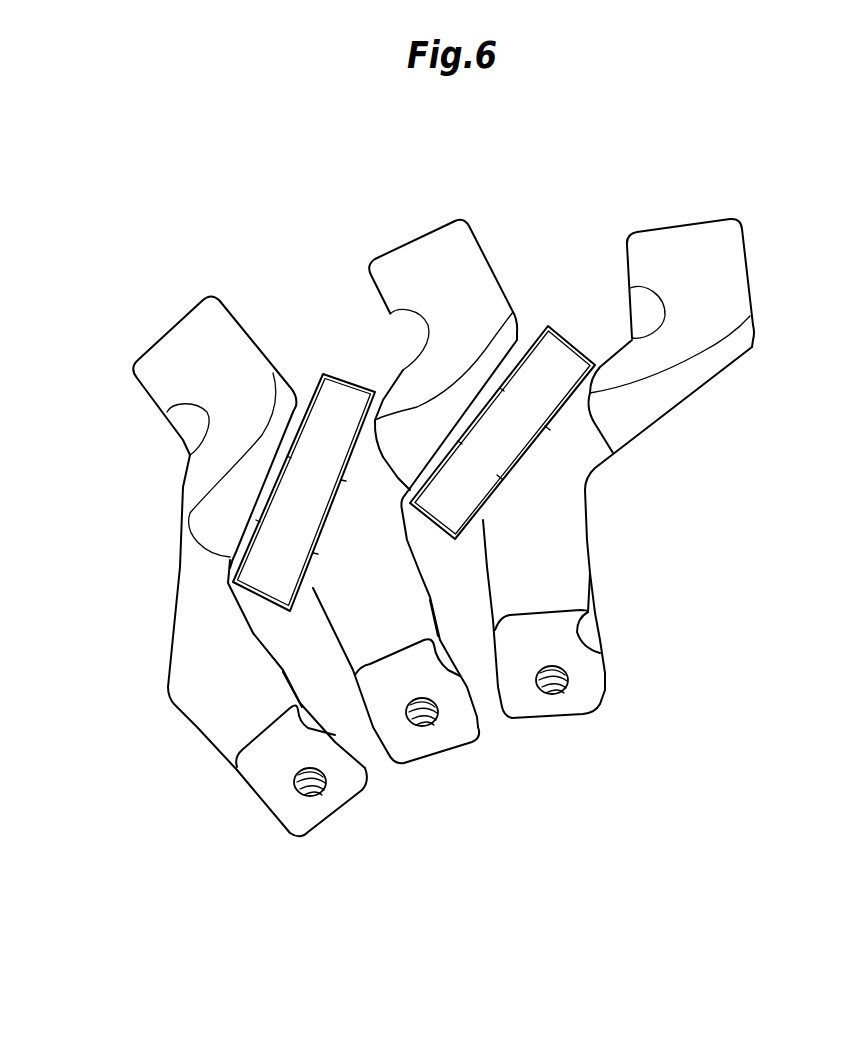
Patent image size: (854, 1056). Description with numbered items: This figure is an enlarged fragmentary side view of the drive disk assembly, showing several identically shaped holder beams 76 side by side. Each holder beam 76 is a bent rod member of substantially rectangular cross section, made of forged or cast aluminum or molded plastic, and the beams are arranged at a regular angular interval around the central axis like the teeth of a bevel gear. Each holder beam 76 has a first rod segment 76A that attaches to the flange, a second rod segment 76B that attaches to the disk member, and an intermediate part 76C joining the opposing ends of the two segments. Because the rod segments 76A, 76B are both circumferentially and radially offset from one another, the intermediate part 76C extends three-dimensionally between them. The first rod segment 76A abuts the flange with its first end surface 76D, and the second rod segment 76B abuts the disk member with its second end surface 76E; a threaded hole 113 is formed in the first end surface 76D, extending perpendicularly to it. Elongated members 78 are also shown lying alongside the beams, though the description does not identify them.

The holder beam 76 is at (413, 515).
The first rod segment 76A is at (205, 713).
The second rod segment 76B is at (217, 313).
The intermediate part 76C is at (220, 523).
The first end surface 76D is at (263, 783).
The second end surface 76E is at (180, 313).
The bar 78 is at (310, 467).
The threaded hole 113 is at (307, 795).